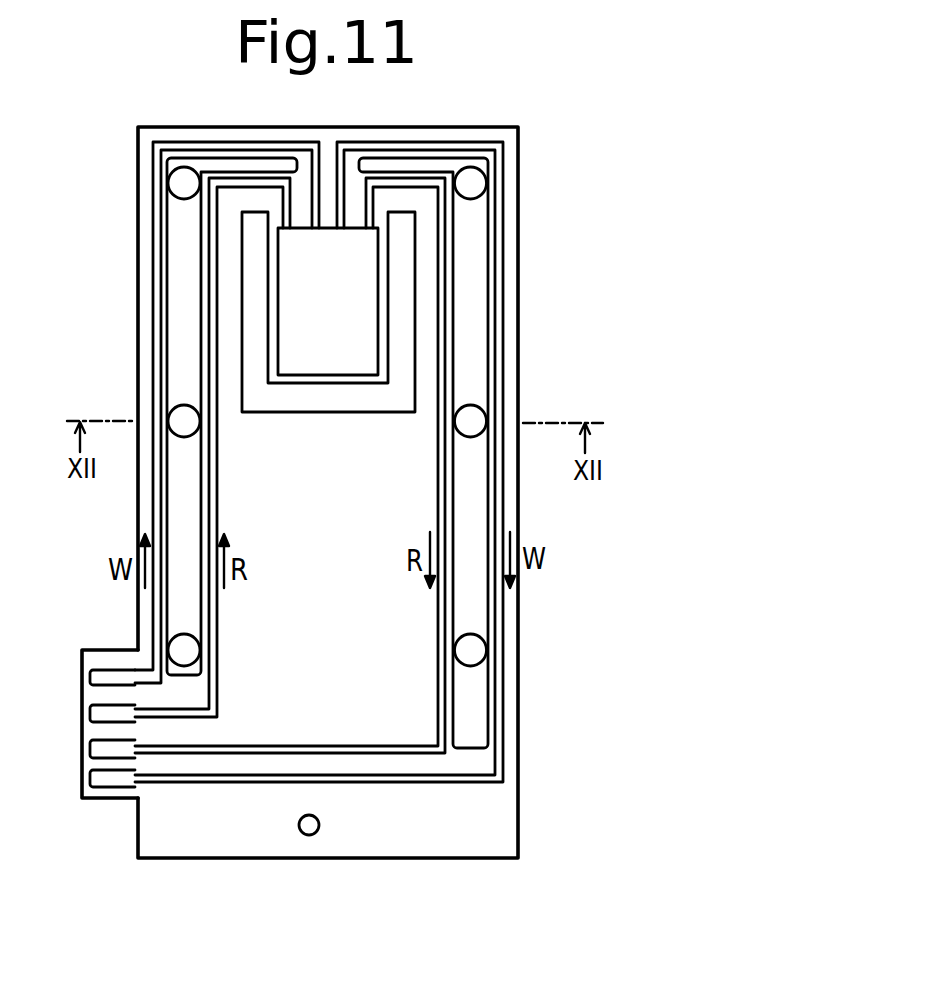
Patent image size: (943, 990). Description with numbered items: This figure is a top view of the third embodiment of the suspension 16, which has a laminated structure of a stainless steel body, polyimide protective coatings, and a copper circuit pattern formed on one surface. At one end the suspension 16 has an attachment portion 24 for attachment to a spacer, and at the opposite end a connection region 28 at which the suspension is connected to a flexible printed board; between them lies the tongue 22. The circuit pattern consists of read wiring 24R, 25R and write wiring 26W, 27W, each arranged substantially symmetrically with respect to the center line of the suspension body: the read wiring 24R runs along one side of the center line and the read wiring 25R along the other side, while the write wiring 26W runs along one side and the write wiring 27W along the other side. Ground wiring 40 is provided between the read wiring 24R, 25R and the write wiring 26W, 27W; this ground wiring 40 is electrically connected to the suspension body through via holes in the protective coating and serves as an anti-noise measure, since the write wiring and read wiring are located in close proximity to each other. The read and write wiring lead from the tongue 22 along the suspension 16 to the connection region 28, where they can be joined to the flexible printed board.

The suspension 16 is at (538, 149).
The tongue 22 is at (350, 318).
The attachment portion 24 is at (482, 822).
The read wiring 24R is at (202, 310).
The read wiring 25R is at (447, 366).
The write wiring 26W is at (152, 357).
The write wiring 27W is at (502, 506).
The connection region 28 is at (92, 652).
The ground wiring 40 is at (180, 497).